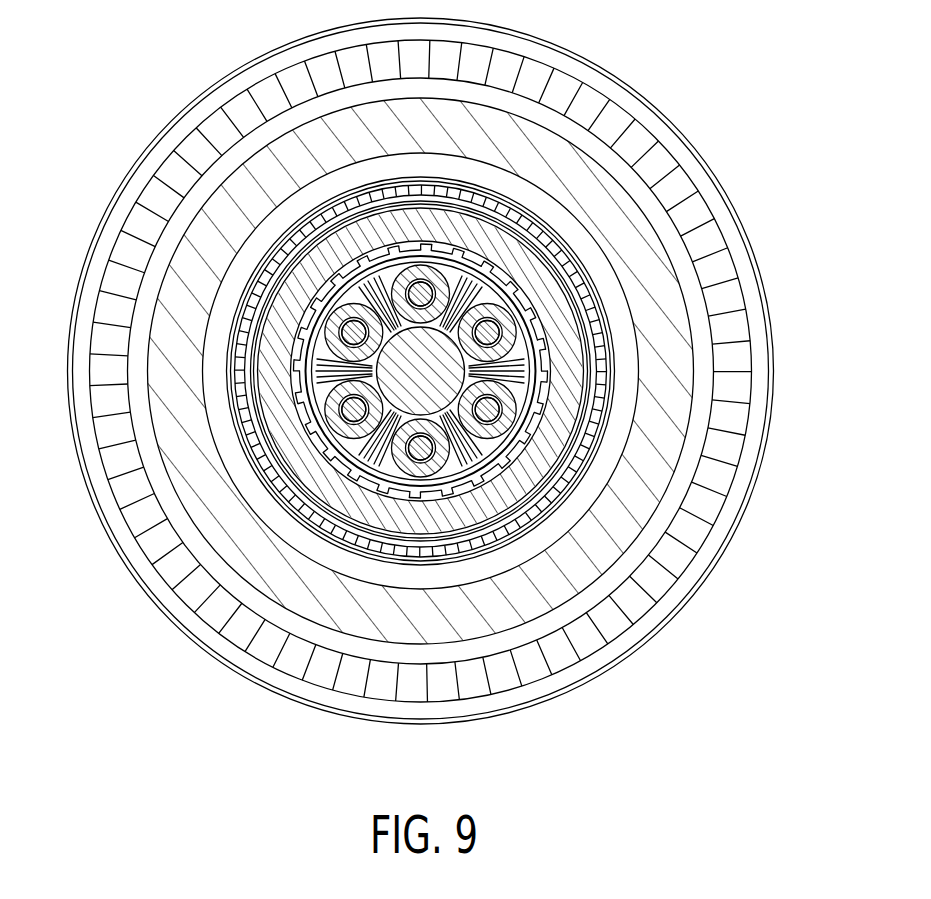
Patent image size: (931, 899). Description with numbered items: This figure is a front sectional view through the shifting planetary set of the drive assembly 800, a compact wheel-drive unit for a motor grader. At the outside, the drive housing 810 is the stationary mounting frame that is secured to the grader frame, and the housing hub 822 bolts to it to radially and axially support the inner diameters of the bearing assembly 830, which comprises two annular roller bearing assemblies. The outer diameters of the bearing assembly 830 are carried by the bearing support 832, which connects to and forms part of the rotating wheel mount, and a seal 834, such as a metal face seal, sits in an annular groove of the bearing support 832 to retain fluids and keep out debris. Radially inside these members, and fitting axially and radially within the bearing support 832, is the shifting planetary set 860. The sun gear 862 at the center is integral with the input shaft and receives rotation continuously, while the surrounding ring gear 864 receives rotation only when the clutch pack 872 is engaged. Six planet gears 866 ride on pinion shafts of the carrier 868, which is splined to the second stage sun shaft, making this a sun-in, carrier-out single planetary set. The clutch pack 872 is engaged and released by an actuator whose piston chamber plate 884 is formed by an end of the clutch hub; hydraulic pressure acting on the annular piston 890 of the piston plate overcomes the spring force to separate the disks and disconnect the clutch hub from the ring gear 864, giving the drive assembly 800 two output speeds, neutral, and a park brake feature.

The drive assembly 800 is at (700, 84).
The drive housing 810 is at (100, 455).
The housing hub 822 is at (272, 515).
The bearing assembly 830 is at (205, 513).
The bearing support 832 is at (776, 372).
The seal 834 is at (158, 496).
The shifting planetary set 860 is at (468, 247).
The sun gear 862 is at (443, 343).
The ring gear 864 is at (352, 462).
The planet gears 866 is at (437, 272).
The carrier 868 is at (484, 540).
The clutch pack 872 is at (548, 457).
The piston chamber plate 884 is at (548, 505).
The annular piston 890 is at (465, 425).